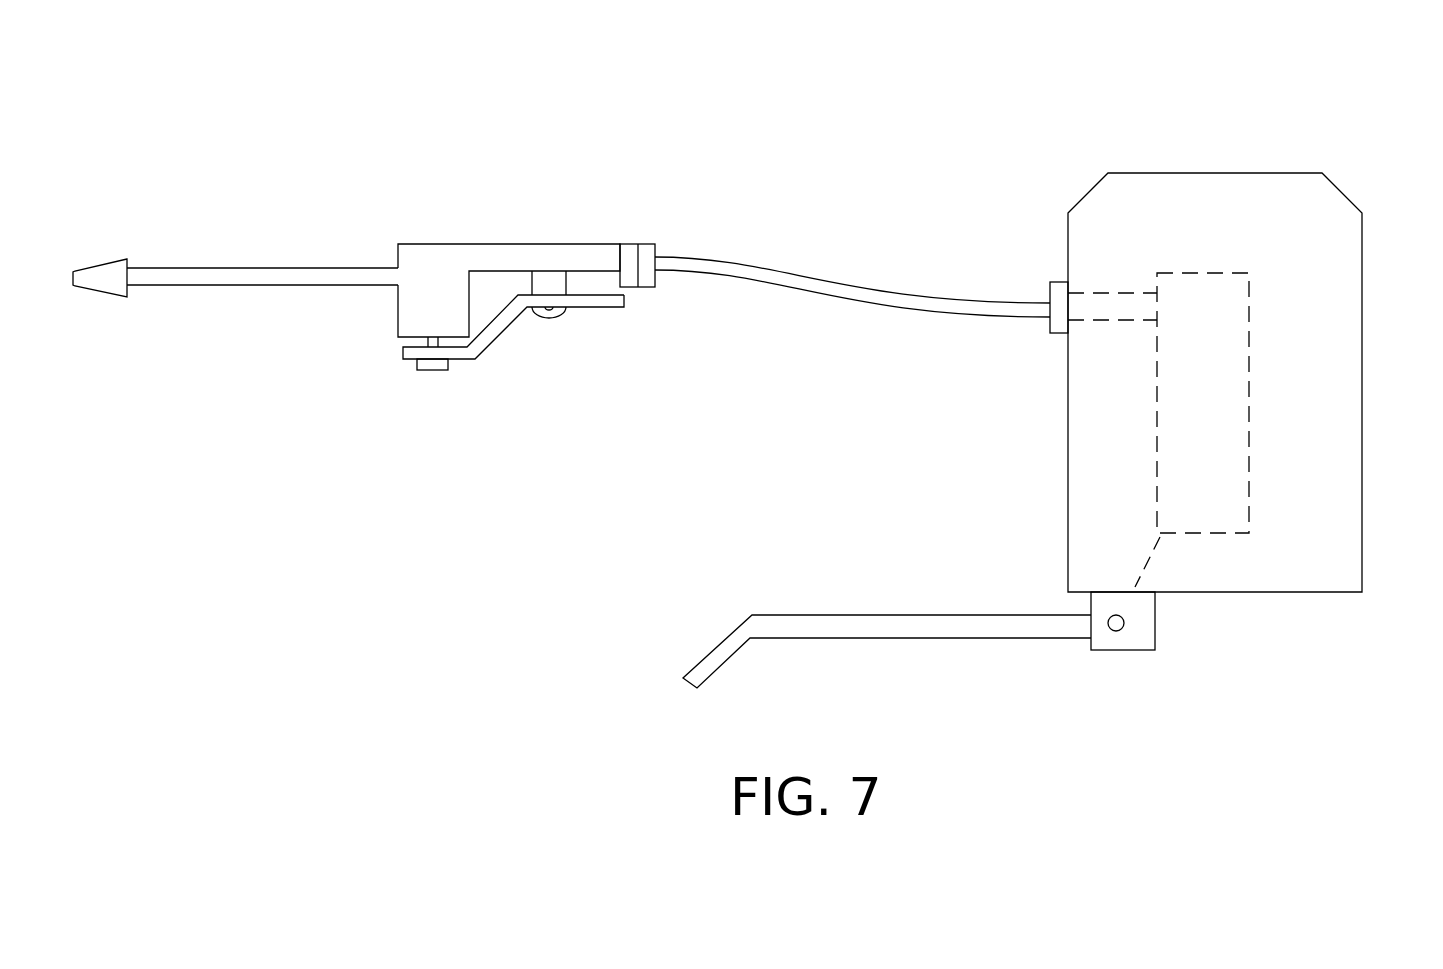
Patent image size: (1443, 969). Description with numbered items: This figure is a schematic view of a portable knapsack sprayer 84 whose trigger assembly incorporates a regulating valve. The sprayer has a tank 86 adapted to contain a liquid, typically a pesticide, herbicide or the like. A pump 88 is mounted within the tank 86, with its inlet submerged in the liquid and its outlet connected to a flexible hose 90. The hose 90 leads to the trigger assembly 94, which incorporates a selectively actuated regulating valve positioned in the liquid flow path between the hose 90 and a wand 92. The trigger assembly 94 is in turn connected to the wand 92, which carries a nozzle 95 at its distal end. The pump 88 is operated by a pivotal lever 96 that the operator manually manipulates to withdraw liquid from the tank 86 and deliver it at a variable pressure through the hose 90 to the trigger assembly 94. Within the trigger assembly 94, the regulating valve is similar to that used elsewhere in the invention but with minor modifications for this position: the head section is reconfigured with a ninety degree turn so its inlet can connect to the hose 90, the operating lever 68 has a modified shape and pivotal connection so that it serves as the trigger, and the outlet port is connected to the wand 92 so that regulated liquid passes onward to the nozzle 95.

The operating lever 68 is at (492, 328).
The knapsack sprayer 84 is at (1053, 367).
The tank 86 is at (1347, 408).
The pump 88 is at (1238, 340).
The flexible hose 90 is at (840, 287).
The wand 92 is at (253, 277).
The trigger assembly 94 is at (524, 216).
The nozzle 95 is at (103, 266).
The pivotal lever 96 is at (868, 627).